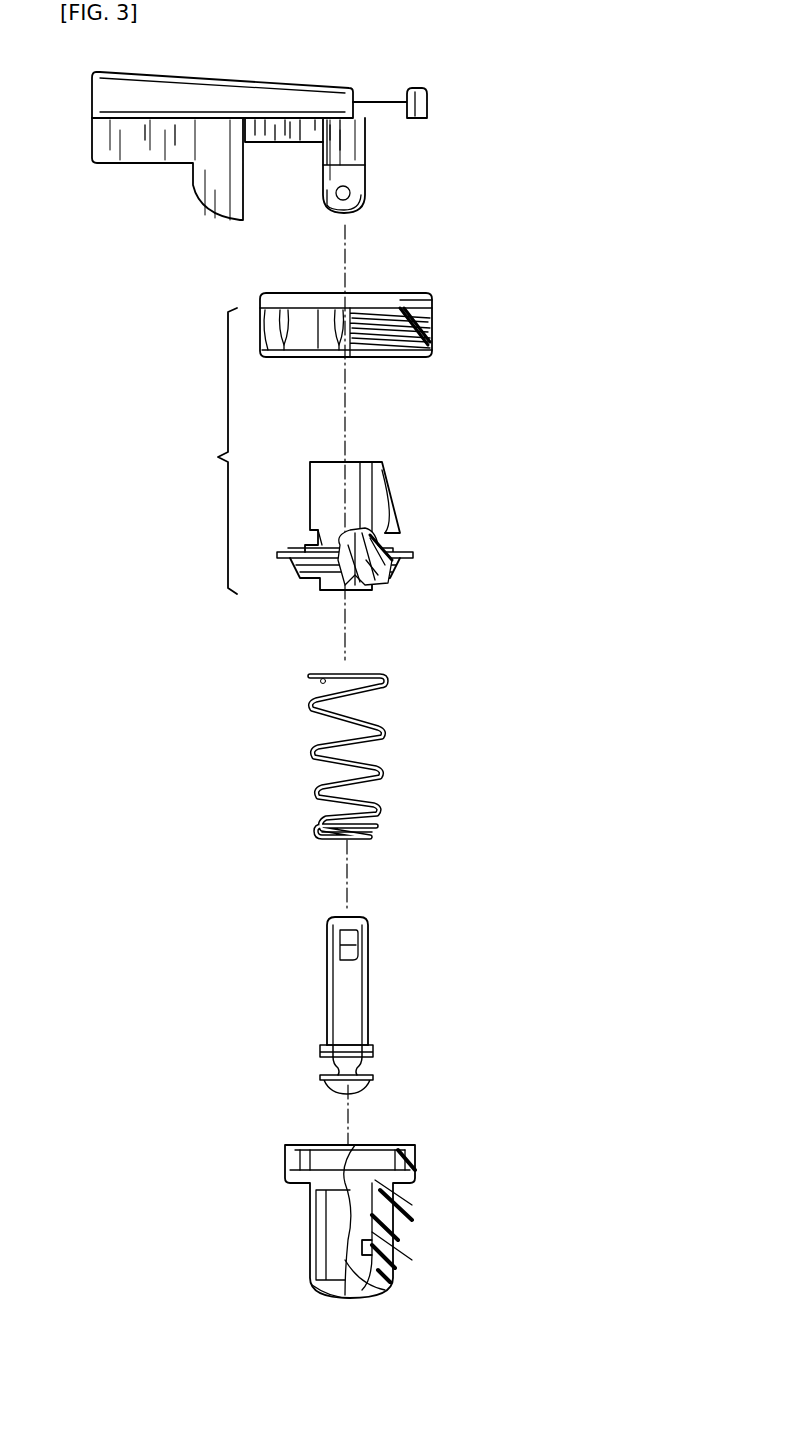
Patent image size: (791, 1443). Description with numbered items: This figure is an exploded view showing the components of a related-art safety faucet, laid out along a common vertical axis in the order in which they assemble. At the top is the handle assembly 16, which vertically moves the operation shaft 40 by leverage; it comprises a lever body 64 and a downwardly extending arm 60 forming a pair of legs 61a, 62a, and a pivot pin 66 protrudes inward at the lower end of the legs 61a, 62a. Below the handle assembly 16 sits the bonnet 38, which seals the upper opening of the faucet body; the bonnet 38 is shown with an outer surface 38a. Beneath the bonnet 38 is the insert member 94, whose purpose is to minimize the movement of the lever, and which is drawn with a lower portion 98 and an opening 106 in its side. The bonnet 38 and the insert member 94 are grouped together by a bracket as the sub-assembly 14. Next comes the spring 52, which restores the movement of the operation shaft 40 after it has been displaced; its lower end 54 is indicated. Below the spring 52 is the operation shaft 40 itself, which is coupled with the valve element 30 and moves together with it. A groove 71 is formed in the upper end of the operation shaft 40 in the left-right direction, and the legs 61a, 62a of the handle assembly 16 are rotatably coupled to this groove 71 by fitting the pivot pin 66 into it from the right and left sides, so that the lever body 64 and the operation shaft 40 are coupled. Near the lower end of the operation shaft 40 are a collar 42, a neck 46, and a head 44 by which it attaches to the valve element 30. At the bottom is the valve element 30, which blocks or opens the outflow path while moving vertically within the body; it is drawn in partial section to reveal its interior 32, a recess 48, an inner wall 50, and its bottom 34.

The valve cartridge assembly 14 is at (213, 455).
The handle assembly 16 is at (348, 82).
The valve element 30 is at (312, 1220).
The bore 32 is at (393, 1218).
The bottom wall 34 is at (333, 1298).
The bonnet 38 is at (262, 310).
The knurled surface 38a is at (397, 302).
The operation shaft 40 is at (326, 990).
The flange 42 is at (378, 1049).
The head 44 is at (375, 1077).
The neck 46 is at (332, 1066).
The recess 48 is at (360, 1248).
The inner wall 50 is at (356, 1268).
The spring 52 is at (306, 745).
The spring end 54 is at (378, 833).
The arm 60 is at (355, 133).
The leg 61a is at (365, 198).
The leg 62a is at (358, 160).
The lever body 64 is at (270, 133).
The pivot pin 66 is at (338, 200).
The groove 71 is at (346, 950).
The insert member 94 is at (328, 475).
The flange 98 is at (398, 558).
The cutout 106 is at (358, 590).